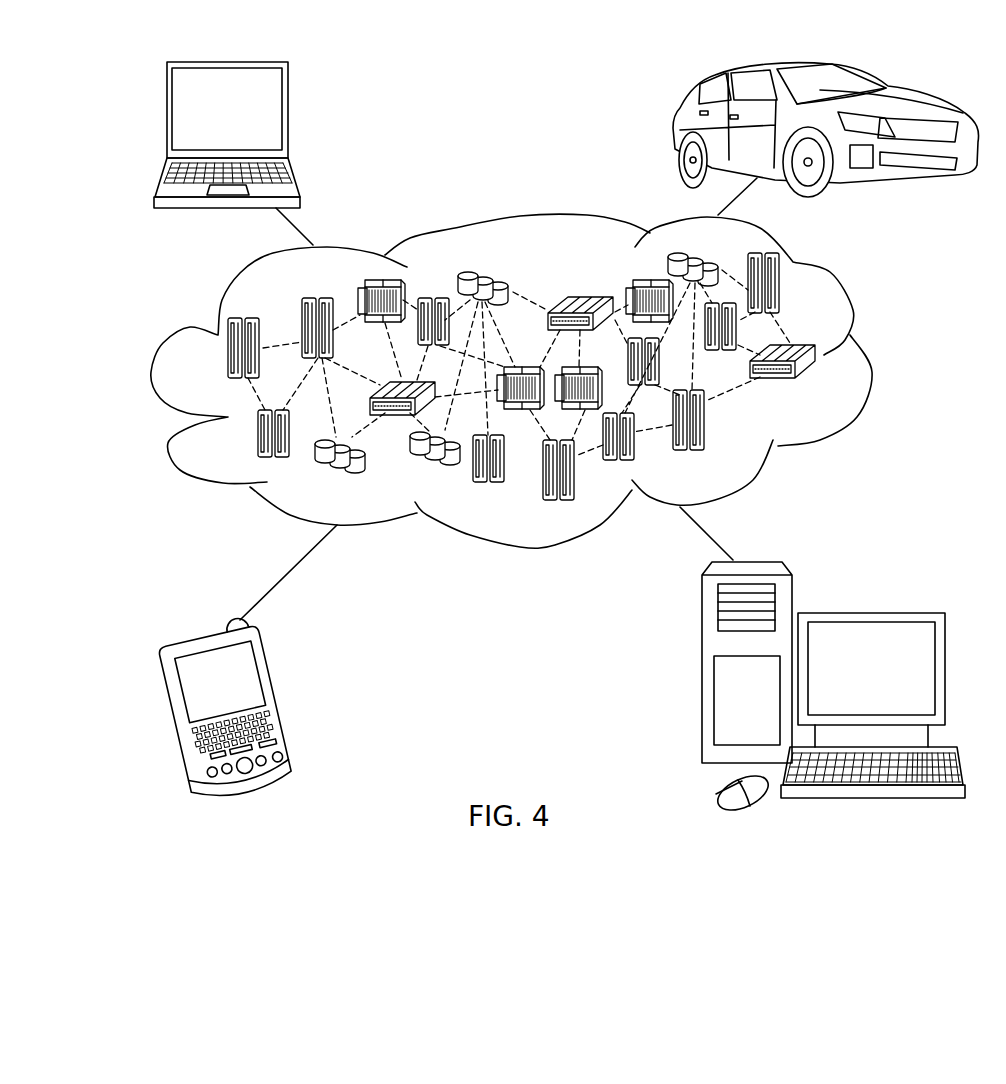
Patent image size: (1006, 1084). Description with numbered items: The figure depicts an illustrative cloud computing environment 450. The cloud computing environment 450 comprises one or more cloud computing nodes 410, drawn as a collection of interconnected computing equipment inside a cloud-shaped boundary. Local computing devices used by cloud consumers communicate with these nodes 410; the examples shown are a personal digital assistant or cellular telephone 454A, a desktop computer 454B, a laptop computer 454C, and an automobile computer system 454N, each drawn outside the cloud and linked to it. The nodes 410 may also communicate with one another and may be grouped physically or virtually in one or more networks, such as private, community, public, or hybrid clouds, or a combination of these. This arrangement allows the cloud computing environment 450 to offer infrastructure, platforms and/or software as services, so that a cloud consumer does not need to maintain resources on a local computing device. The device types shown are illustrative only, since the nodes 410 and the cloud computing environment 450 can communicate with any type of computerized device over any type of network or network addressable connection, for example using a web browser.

The cloud computing nodes 410 is at (828, 387).
The cloud computing environment 450 is at (869, 360).
The personal digital assistant (PDA) or cellular telephone 454A is at (281, 693).
The desktop computer 454B is at (868, 613).
The laptop computer 454C is at (288, 115).
The automobile computer system 454N is at (676, 130).